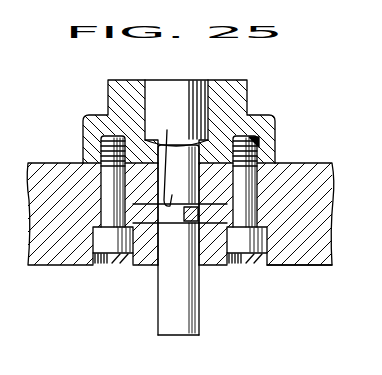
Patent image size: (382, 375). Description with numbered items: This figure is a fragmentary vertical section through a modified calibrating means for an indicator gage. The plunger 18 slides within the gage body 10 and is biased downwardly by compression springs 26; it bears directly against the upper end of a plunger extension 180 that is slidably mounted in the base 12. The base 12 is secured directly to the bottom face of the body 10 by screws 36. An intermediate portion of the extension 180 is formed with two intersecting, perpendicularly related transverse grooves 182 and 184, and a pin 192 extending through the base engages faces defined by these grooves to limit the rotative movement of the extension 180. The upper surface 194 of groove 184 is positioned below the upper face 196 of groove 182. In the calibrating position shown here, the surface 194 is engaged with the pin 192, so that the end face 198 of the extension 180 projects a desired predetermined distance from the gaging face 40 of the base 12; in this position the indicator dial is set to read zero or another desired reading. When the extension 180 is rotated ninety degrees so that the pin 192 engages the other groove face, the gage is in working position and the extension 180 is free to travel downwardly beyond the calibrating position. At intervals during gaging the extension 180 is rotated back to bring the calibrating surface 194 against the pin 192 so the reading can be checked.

The gage body 10 is at (243, 110).
The base 12 is at (312, 173).
The plunger 18 is at (188, 93).
The compression springs 26 is at (142, 206).
The screws 36 is at (117, 252).
The gaging face 40 is at (306, 266).
The plunger extension 180 is at (167, 307).
The transverse groove 182 is at (160, 212).
The transverse groove 184 is at (197, 217).
The pin 192 is at (178, 268).
The upper surface of groove 194 is at (193, 205).
The upper face of groove 196 is at (176, 121).
The end face of extension 198 is at (188, 336).